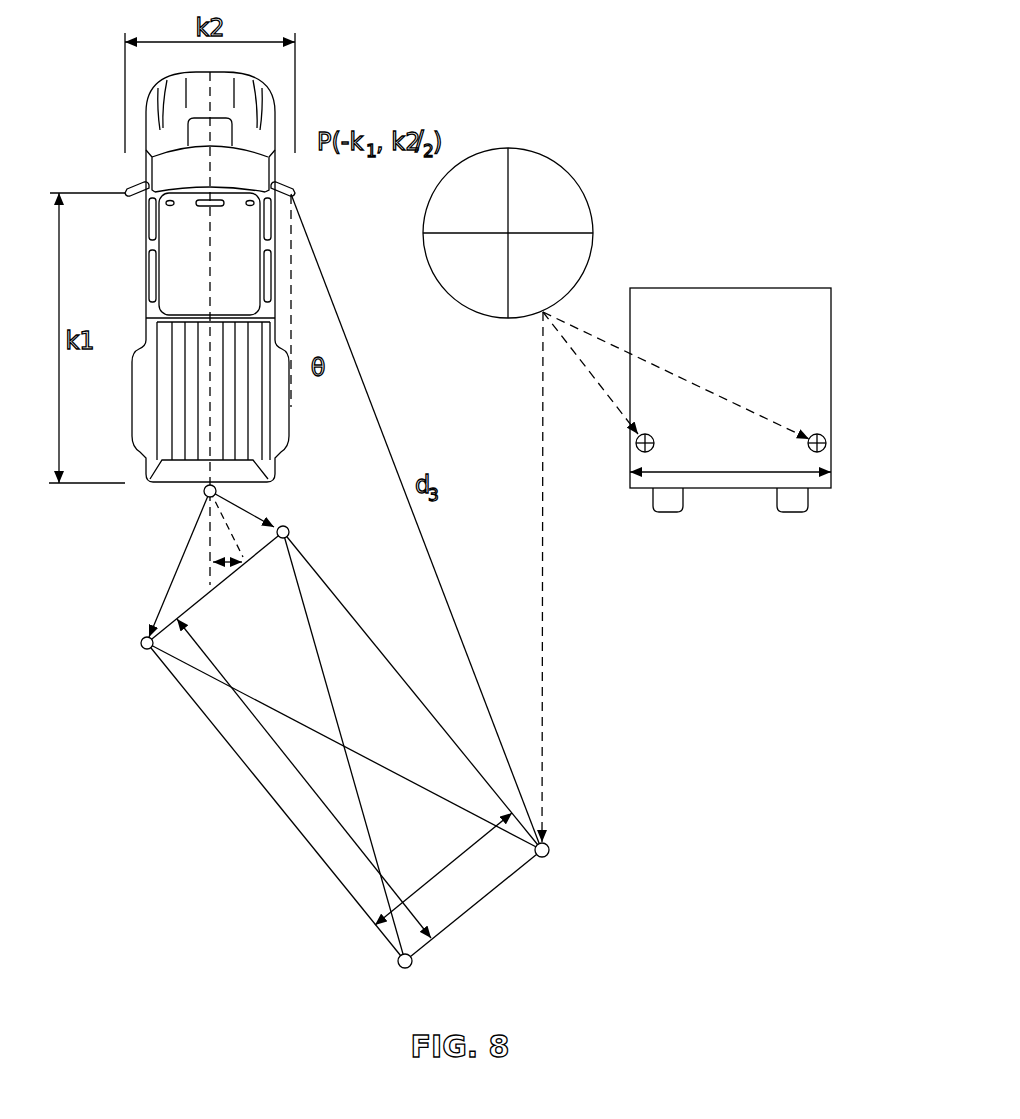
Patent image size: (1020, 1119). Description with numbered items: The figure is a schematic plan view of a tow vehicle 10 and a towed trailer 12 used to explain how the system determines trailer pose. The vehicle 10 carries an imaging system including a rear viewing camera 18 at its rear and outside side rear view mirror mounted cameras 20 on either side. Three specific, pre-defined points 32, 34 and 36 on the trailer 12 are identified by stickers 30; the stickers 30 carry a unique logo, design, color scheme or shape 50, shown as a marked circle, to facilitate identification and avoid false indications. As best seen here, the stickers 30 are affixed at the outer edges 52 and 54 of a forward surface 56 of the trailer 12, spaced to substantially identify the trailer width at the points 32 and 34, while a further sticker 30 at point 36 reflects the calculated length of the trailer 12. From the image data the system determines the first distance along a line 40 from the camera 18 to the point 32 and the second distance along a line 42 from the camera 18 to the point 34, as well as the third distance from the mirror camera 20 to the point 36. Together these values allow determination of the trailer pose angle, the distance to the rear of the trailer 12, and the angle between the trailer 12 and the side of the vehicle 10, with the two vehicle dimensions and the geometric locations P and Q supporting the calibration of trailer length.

The vehicle 10 is at (146, 278).
The towed trailer 12 is at (272, 794).
The rear viewing camera 18 is at (204, 493).
The outside side rear view mirror mounted camera 20 is at (130, 186).
The sticker 30 is at (537, 150).
The point 32 is at (290, 536).
The point 34 is at (142, 638).
The point 36 is at (548, 856).
The line 40 is at (265, 518).
The line 42 is at (166, 602).
The unique logo, design, color scheme or shape 50 is at (450, 308).
The outer edge 52 is at (630, 380).
The outer edge 54 is at (831, 365).
The forward surface 56 is at (755, 308).